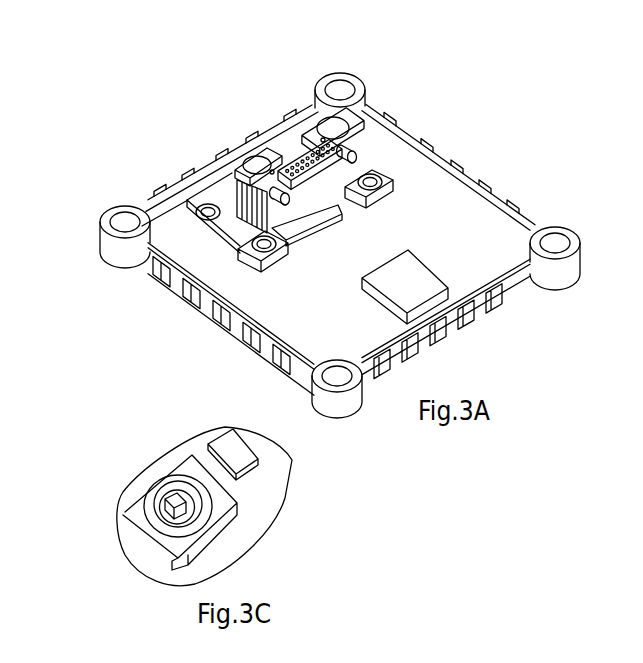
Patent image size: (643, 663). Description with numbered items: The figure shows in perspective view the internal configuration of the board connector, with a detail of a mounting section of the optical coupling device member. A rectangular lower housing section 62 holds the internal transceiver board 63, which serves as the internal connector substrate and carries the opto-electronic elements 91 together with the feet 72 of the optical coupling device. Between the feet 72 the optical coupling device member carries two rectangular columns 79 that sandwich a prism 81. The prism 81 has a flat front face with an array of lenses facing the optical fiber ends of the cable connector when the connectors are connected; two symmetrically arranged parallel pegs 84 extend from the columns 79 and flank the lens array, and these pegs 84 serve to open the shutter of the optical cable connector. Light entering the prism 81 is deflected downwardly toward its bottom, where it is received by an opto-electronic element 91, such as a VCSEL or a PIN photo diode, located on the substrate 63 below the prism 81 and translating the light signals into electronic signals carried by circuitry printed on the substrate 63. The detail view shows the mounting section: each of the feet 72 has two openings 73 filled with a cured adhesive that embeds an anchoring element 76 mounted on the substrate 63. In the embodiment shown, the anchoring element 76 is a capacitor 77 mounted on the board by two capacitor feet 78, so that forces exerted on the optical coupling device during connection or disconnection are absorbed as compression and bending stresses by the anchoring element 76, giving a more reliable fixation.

In FIG. 3A, the lower housing section 62 is at (493, 297).
In FIG. 3A, the internal transceiver board 63 is at (480, 217).
In FIG. 3A, the feet 72 is at (385, 178).
In FIG. 3A, the openings 73 is at (200, 192).
In FIG. 3C, the openings 73 is at (136, 510).
In FIG. 3C, the anchoring element 76 is at (173, 515).
In FIG. 3C, the capacitor 77 is at (175, 517).
In FIG. 3C, the capacitor feet 78 is at (165, 500).
In FIG. 3A, the rectangular columns 79 is at (321, 132).
In FIG. 3A, the prism 81 is at (297, 170).
In FIG. 3A, the pegs 84 is at (352, 157).
In FIG. 3A, the opto-electronic element 91 is at (310, 225).